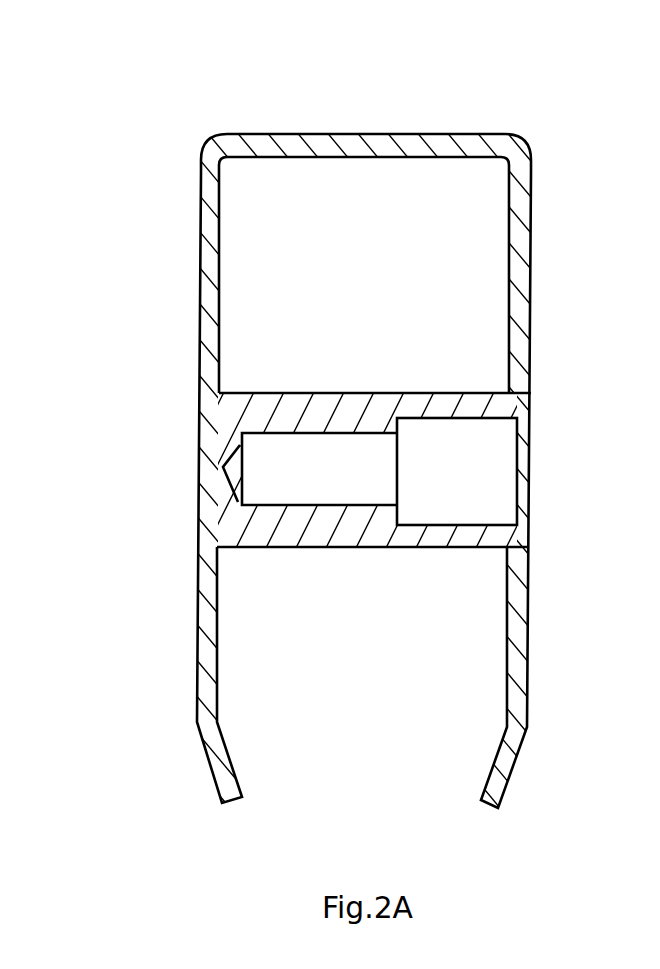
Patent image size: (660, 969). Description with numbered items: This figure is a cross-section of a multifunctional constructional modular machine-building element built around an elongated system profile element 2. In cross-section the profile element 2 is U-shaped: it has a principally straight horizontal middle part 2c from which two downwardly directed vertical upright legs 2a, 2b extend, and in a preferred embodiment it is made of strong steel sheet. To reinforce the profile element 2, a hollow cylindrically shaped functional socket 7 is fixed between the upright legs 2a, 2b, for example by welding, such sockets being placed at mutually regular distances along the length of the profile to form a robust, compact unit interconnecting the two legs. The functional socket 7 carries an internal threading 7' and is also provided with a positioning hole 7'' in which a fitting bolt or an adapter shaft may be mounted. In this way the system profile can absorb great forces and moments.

The profile element 2 is at (394, 143).
The upright leg 2a is at (206, 263).
The upright leg 2b is at (523, 233).
The middle part 2c is at (298, 145).
The functional socket 7 is at (422, 514).
The internal threading 7' is at (217, 560).
The positioning hole 7'' is at (508, 443).